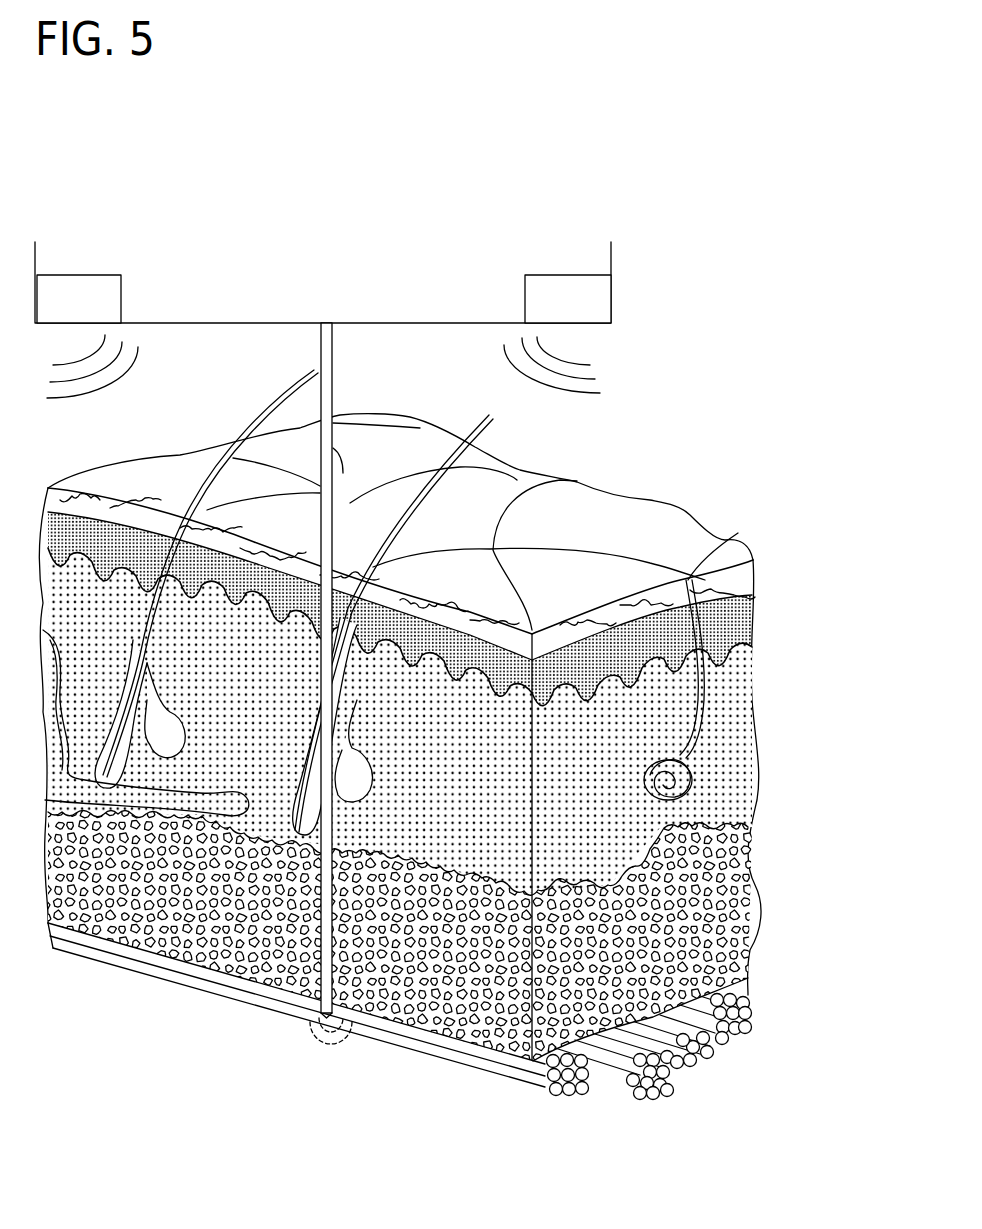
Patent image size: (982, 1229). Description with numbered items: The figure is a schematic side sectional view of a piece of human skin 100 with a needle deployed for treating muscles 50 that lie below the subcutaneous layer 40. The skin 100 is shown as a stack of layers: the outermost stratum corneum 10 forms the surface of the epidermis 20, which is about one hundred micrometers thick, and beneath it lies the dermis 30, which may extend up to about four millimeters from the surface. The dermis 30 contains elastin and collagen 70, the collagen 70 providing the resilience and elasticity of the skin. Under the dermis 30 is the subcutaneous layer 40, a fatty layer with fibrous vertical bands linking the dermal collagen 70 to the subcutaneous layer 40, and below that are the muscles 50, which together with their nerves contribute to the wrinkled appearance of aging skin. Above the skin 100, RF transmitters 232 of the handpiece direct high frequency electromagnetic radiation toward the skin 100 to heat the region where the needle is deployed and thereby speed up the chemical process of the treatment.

The skin 100 is at (755, 430).
The stratum corneum 10 is at (718, 563).
The epidermis 20 is at (742, 612).
The dermis 30 is at (750, 740).
The subcutaneous layer 40 is at (757, 888).
The muscles 50 is at (750, 1013).
The collagen 70 is at (49, 775).
The RF transmitters 232 is at (121, 292).